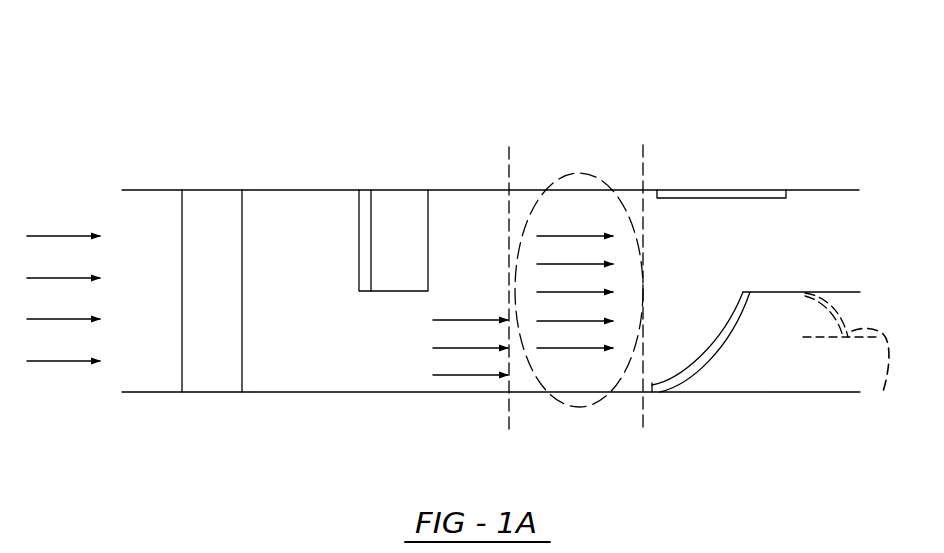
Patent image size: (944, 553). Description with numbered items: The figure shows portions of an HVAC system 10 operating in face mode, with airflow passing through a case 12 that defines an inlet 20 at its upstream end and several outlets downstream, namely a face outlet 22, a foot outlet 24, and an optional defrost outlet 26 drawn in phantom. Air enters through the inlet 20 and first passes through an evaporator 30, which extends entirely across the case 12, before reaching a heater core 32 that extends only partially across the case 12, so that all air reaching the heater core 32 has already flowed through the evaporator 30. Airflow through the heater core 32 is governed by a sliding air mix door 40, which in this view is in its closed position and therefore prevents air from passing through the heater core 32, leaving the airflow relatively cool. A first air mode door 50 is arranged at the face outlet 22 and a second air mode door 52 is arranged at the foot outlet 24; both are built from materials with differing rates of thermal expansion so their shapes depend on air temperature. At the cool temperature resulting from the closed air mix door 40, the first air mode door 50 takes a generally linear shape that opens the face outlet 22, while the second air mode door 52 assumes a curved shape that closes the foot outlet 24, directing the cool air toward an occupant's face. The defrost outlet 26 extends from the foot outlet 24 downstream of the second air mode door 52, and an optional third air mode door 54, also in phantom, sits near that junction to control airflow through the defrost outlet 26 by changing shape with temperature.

The HVAC system 10 is at (175, 72).
The case 12 is at (466, 190).
The inlet 20 is at (159, 190).
The face outlet 22 is at (817, 262).
The foot outlet 24 is at (768, 325).
The defrost outlet 26 is at (855, 320).
The evaporator 30 is at (212, 366).
The heater core 32 is at (394, 208).
The air mix door 40 is at (359, 235).
The first air mode door 50 is at (692, 198).
The second air mode door 52 is at (740, 335).
The third air mode door 54 is at (874, 376).